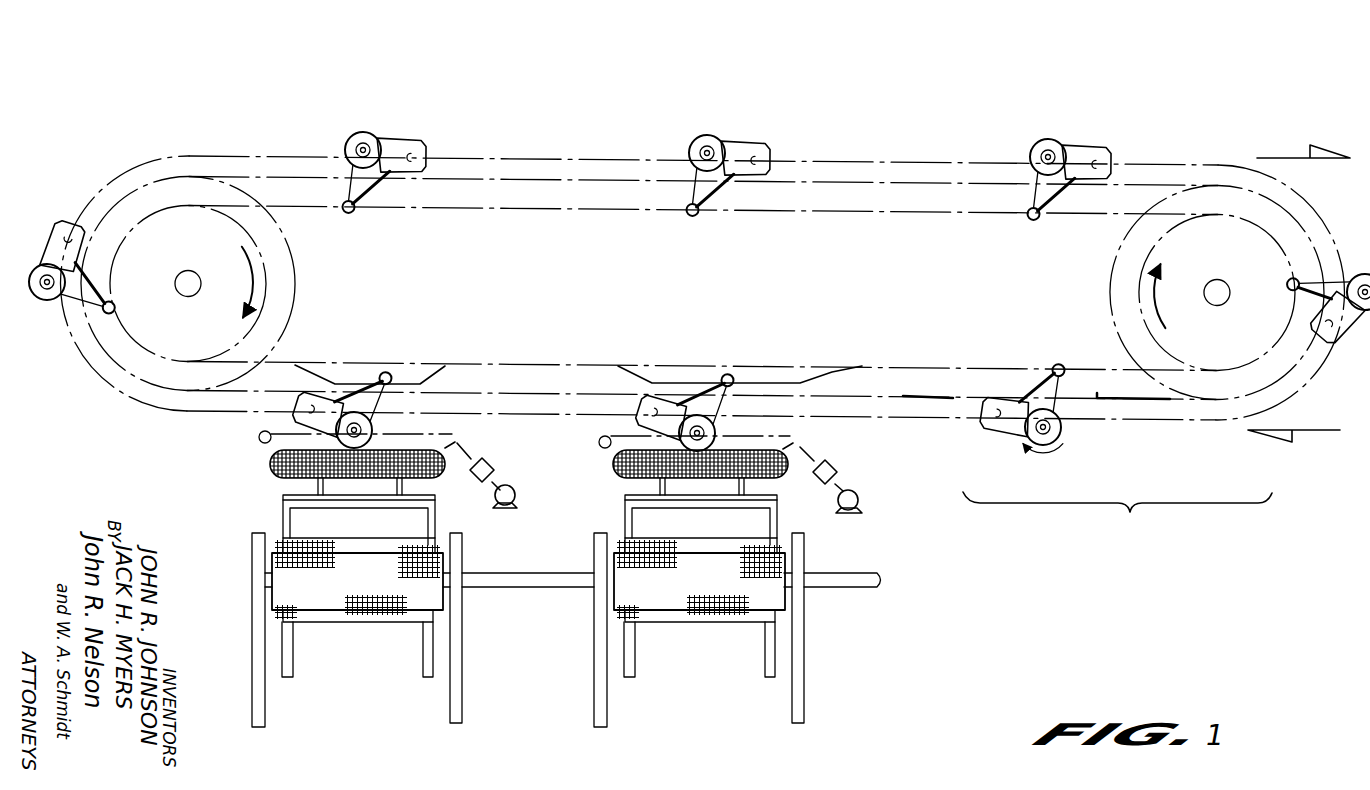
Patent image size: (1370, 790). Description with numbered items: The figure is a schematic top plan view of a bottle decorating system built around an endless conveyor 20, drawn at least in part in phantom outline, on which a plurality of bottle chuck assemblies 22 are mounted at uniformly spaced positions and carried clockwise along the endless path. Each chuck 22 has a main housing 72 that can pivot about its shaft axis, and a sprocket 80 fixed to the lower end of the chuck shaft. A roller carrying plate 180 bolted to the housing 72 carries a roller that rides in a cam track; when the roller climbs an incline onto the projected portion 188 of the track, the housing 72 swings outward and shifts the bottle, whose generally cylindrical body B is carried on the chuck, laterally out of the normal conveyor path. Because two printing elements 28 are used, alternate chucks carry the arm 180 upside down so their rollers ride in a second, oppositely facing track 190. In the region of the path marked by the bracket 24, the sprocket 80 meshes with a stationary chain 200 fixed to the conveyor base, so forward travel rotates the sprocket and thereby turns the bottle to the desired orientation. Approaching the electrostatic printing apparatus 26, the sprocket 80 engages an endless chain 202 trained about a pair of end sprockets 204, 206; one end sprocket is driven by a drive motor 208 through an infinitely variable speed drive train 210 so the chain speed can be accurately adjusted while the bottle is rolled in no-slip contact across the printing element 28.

The endless conveyor 20 is at (295, 136).
The bottle chuck assembly 22 is at (699, 280).
The orienting region of conveyor path 24 is at (1117, 524).
The electrostatic printing apparatus 26 is at (527, 690).
The printing element 28 is at (275, 470).
The main housing 72 is at (297, 406).
The sprocket 80 is at (412, 138).
The roller carrying plate 180 is at (388, 373).
The projected portion of track 188 is at (766, 382).
The second oppositely facing track 190 is at (444, 382).
The stationary chain 200 is at (926, 394).
The endless chain 202 is at (420, 432).
The end sprocket 204 is at (260, 442).
The end sprocket 206 is at (460, 441).
The drive motor 208 is at (518, 500).
The infinitely variable speed drive train 210 is at (480, 485).
The bottle body B is at (374, 425).